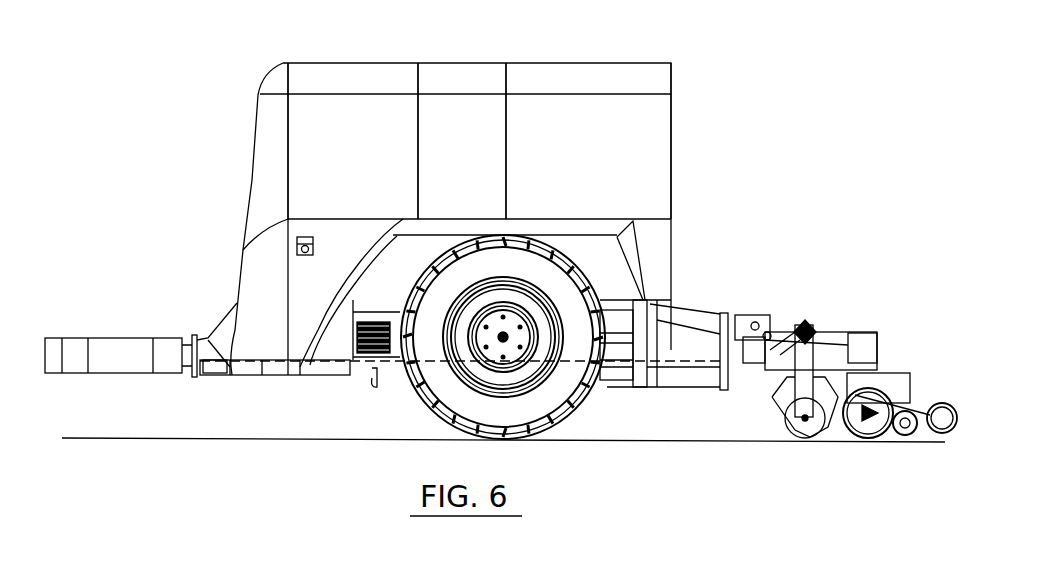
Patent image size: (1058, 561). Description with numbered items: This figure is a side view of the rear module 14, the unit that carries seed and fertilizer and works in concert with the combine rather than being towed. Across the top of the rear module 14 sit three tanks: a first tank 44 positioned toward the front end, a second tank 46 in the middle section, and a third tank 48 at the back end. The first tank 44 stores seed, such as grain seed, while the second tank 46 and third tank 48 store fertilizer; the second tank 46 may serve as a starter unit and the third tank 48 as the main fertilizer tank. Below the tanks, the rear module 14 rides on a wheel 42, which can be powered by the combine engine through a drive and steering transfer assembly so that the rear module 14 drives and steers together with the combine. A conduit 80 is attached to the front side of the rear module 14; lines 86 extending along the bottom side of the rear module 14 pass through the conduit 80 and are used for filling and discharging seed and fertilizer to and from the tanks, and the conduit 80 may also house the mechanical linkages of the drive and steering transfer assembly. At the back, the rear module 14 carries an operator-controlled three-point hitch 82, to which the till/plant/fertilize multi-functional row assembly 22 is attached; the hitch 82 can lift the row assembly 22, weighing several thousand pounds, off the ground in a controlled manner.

The rear module 14 is at (722, 70).
The till/plant/fertilize multi-functional row assembly 22 is at (846, 303).
The wheel 42 is at (516, 410).
The first tank 44 is at (358, 70).
The second tank 46 is at (466, 70).
The third tank 48 is at (595, 70).
The conduit 80 is at (122, 338).
The three-point hitch 82 is at (722, 320).
The lines 86 is at (372, 372).